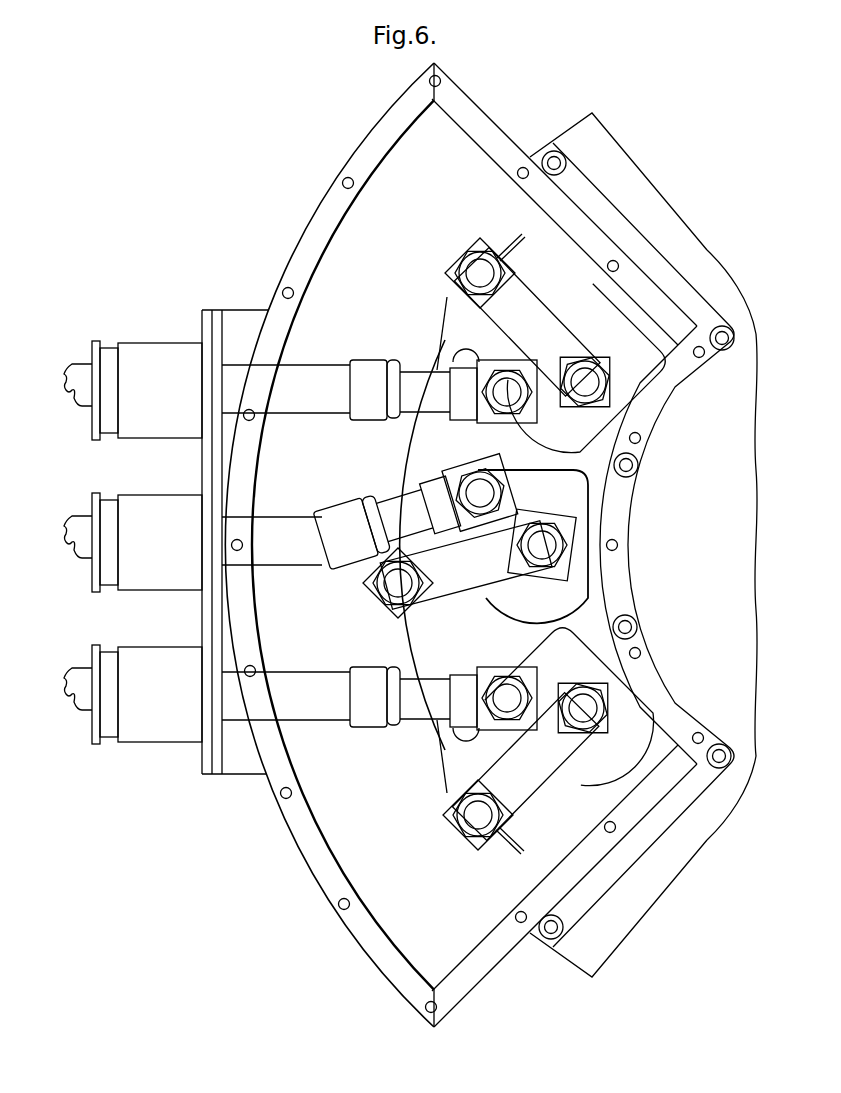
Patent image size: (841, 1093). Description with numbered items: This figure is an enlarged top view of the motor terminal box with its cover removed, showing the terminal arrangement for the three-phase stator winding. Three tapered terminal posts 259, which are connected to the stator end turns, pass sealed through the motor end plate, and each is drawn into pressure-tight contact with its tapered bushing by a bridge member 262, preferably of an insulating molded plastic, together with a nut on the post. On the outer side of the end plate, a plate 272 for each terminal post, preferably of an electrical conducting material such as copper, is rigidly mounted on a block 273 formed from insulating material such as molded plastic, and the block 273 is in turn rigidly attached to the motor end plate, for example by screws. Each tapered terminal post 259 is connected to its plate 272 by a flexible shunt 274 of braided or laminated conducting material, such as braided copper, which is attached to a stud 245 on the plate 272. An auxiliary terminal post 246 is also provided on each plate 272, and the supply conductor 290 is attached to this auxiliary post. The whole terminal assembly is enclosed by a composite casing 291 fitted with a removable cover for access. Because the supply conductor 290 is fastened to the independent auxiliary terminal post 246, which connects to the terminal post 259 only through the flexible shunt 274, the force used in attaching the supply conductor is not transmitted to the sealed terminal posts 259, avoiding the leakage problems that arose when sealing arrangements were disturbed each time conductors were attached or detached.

The stud 245 is at (468, 272).
The auxiliary terminal post 246 is at (503, 398).
The tapered terminal post 259 is at (597, 377).
The bridge member 262 is at (630, 398).
The plate 272 is at (450, 318).
The block 273 is at (522, 846).
The flexible shunt 274 is at (535, 312).
The supply conductor 290 is at (345, 723).
The composite casing 291 is at (298, 851).